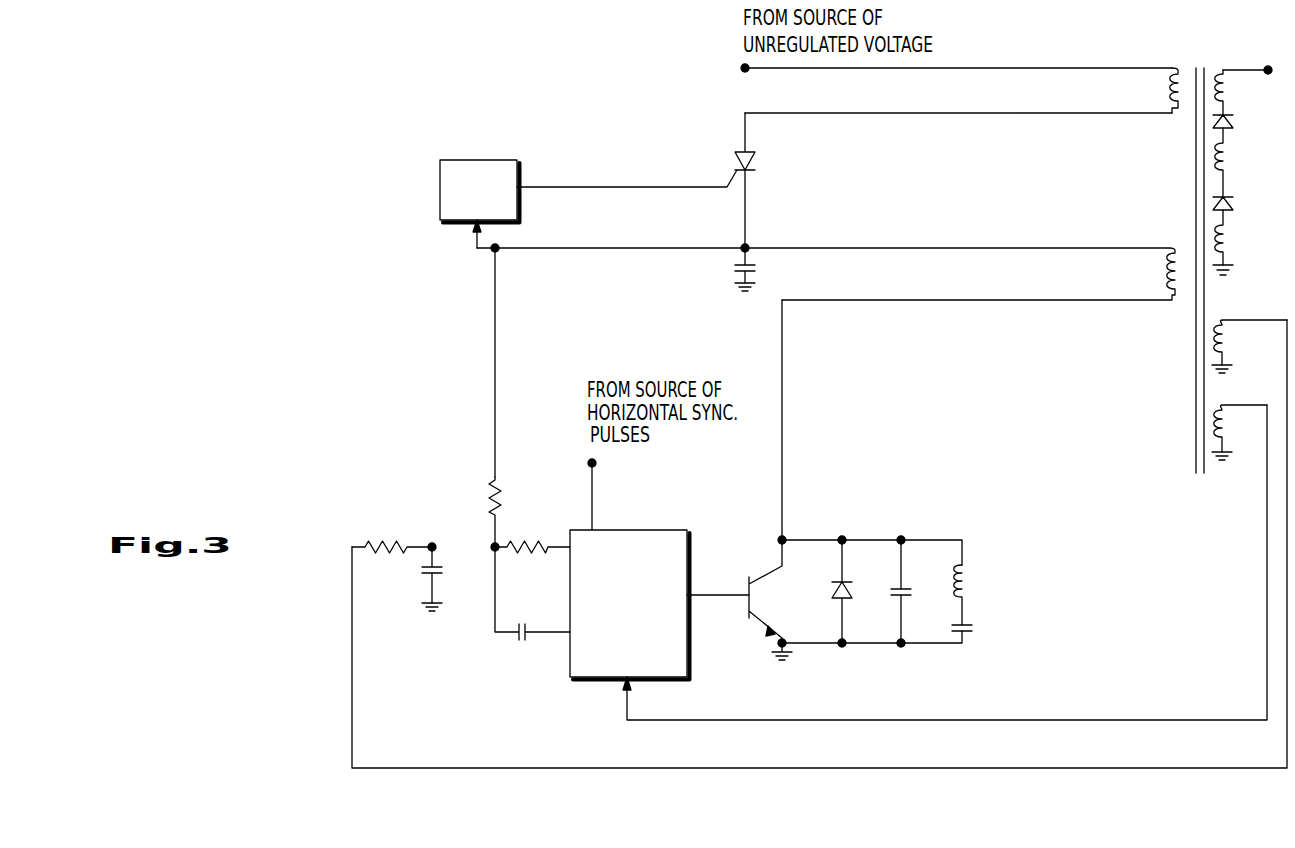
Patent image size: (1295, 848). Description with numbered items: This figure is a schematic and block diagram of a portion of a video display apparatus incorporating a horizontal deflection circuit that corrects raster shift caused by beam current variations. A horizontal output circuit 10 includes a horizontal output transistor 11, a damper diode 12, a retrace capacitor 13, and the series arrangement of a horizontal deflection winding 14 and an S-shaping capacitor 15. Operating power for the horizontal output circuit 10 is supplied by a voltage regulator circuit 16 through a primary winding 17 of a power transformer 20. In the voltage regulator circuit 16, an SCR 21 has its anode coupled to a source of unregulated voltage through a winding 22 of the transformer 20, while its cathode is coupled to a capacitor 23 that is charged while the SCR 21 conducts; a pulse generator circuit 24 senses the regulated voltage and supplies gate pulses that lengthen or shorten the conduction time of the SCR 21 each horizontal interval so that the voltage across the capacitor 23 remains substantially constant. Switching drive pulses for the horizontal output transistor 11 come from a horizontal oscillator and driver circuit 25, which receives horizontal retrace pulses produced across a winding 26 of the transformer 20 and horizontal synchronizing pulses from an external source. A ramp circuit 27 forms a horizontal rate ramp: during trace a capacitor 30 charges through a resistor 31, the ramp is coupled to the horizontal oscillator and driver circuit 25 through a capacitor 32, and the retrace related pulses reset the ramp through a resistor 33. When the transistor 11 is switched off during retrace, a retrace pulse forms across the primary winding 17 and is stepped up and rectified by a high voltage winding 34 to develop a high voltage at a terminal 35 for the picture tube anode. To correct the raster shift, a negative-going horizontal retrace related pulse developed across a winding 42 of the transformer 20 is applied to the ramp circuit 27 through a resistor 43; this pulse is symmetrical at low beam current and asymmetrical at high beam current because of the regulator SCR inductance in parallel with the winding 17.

The horizontal output circuit 10 is at (894, 679).
The horizontal output transistor 11 is at (766, 572).
The damper diode 12 is at (850, 594).
The retrace capacitor 13 is at (909, 592).
The horizontal deflection winding 14 is at (968, 570).
The S-shaping capacitor 15 is at (969, 633).
The voltage regulator circuit 16 is at (624, 223).
The primary winding 17 is at (1168, 279).
The power transformer 20 is at (1193, 480).
The SCR 21 is at (754, 165).
The winding 22 is at (1180, 110).
The capacitor 23 is at (752, 268).
The pulse generator circuit 24 is at (517, 160).
The horizontal oscillator and driver circuit 25 is at (689, 670).
The winding 26 is at (1222, 405).
The ramp circuit 27 is at (479, 698).
The capacitor 30 is at (434, 570).
The resistor 31 is at (489, 490).
The capacitor 32 is at (519, 640).
The resistor 33 is at (528, 542).
The high voltage winding 34 is at (1229, 153).
The terminal 35 is at (1268, 70).
The winding 42 is at (1222, 320).
The resistor 43 is at (382, 541).